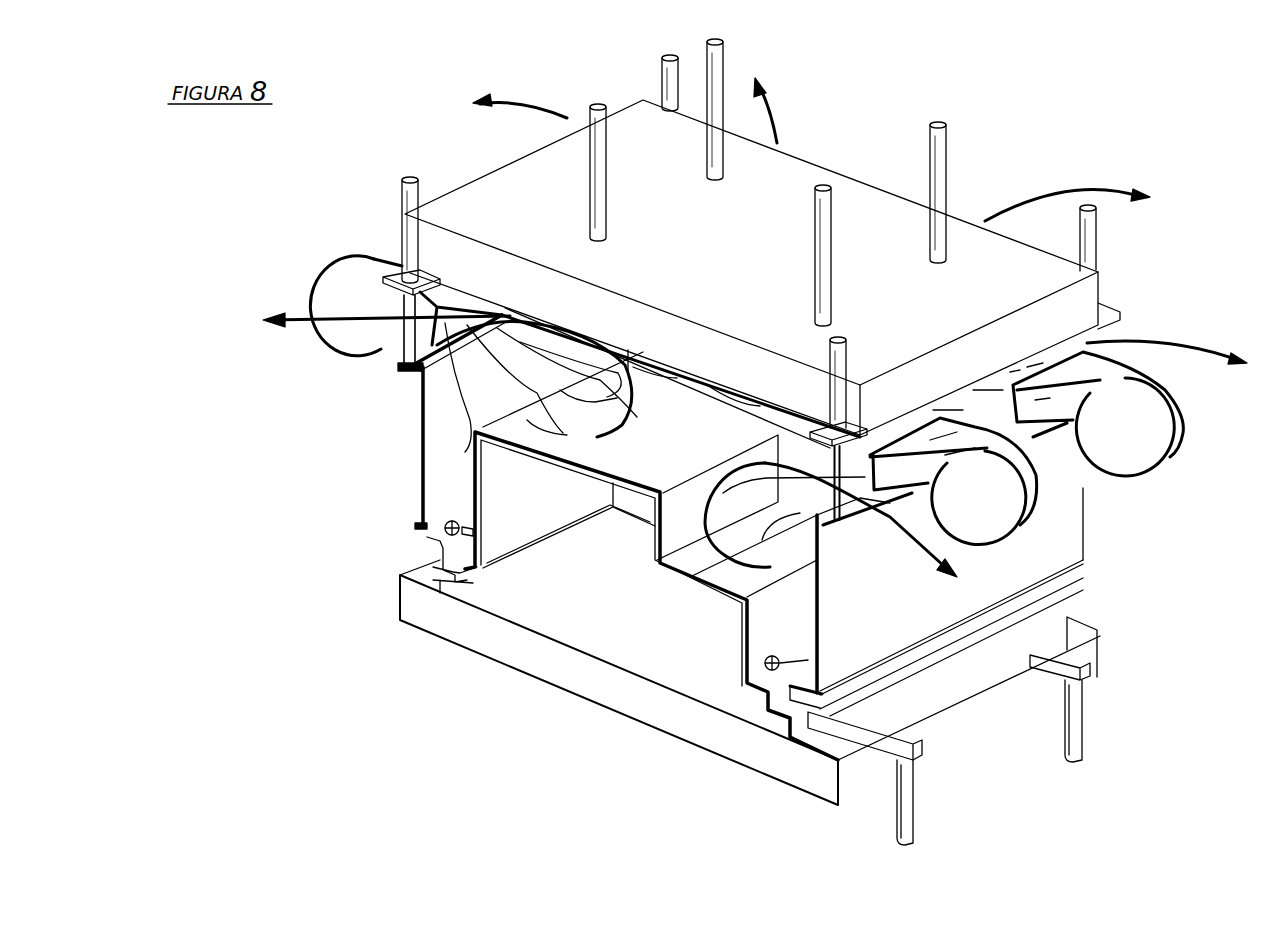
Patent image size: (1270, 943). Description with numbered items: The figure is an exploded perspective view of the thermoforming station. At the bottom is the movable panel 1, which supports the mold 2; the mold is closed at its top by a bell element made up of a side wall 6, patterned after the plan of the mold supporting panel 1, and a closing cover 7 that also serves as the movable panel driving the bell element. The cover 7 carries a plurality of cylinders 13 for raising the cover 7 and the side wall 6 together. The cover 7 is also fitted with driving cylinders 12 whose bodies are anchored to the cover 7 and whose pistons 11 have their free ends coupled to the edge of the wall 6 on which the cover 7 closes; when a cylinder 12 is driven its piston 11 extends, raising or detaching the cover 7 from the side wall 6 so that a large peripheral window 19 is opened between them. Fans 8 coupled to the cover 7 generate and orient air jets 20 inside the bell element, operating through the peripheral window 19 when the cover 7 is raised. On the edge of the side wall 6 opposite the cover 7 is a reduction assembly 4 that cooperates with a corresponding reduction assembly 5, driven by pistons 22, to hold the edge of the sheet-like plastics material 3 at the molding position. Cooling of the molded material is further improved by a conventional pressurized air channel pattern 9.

The movable panel 1 is at (635, 710).
The mold 2 is at (557, 463).
The sheet-like plastics material 3 is at (477, 480).
The reduction assembly 4 is at (440, 547).
The reduction assembly 5 is at (440, 550).
The side wall 6 is at (417, 497).
The closing cover 7 is at (1103, 290).
The fans 8 is at (1032, 520).
The pressurized air channel pattern 9 is at (795, 663).
The pistons 11 is at (395, 307).
The driving cylinders 12 is at (403, 197).
The cylinders 13 is at (950, 152).
The peripheral window 19 is at (472, 165).
The air jets 20 is at (453, 392).
The pistons 22 is at (917, 815).